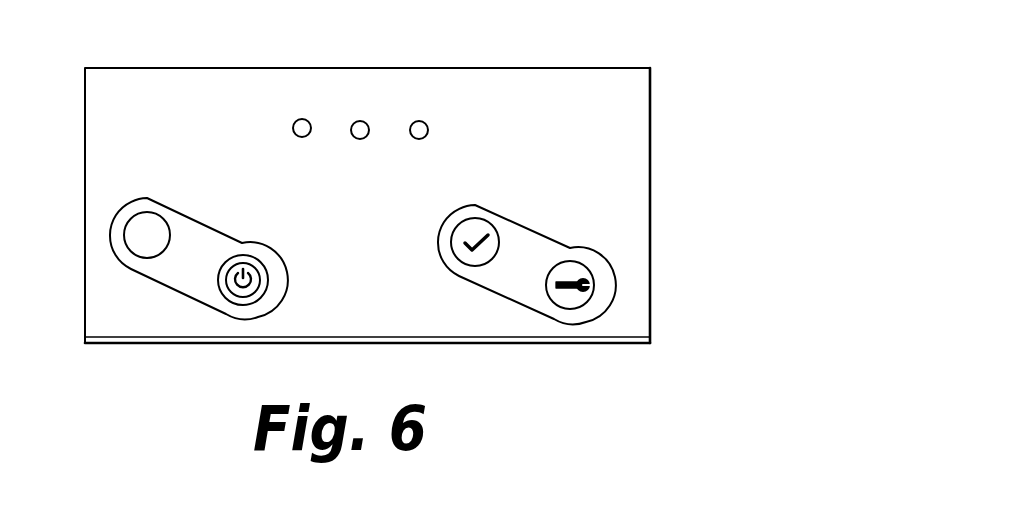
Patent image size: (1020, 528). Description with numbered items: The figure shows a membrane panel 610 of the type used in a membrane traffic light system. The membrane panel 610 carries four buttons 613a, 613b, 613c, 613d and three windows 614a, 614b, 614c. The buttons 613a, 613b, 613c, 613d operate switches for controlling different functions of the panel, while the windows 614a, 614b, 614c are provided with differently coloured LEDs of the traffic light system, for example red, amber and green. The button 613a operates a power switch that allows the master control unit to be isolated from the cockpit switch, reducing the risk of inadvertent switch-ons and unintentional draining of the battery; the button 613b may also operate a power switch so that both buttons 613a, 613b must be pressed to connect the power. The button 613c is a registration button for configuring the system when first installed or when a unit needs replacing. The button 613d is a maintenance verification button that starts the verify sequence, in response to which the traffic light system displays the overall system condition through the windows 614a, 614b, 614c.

The membrane panel 610 is at (686, 78).
The button 613a is at (243, 298).
The button 613b is at (152, 252).
The registration button 613c is at (567, 302).
The maintenance verification button 613d is at (480, 258).
The window 614a is at (302, 119).
The window 614b is at (361, 121).
The window 614c is at (421, 121).